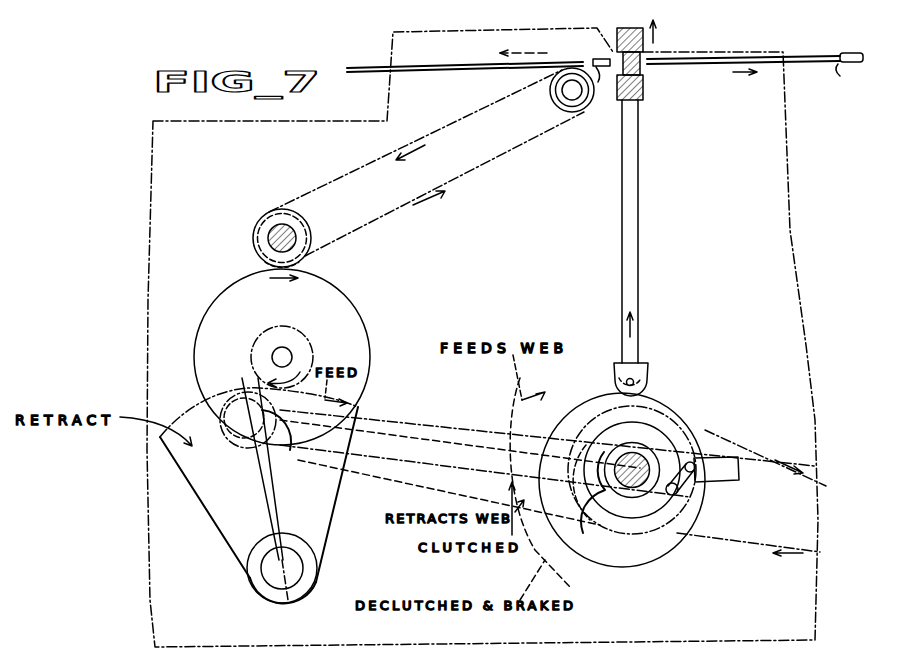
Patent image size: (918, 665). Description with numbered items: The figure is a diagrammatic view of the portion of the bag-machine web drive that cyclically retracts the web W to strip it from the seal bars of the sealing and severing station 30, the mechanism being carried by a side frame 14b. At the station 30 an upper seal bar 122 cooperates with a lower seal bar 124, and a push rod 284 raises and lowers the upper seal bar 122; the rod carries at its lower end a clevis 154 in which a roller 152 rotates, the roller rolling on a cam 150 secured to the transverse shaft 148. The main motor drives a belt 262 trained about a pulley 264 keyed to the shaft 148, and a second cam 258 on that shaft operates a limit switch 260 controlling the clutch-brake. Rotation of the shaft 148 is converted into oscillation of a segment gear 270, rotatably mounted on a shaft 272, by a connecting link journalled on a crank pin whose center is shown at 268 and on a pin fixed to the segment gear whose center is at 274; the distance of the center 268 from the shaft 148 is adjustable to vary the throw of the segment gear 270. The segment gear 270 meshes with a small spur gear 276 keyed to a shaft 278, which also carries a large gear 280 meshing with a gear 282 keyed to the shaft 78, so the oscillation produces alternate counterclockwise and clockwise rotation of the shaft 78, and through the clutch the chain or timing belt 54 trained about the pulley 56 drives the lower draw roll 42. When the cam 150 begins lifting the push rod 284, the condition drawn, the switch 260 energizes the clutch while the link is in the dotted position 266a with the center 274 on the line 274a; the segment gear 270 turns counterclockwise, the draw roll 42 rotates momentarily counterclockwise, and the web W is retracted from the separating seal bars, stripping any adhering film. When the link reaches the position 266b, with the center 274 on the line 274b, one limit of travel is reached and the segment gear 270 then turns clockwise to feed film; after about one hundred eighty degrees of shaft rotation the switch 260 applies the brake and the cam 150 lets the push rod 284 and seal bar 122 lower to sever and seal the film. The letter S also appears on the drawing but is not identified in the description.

The side frame 14b is at (235, 120).
The web W is at (425, 66).
The splice / web end S is at (720, 82).
The sealing and severing station 30 is at (674, 45).
The upper seal bar 122 is at (617, 42).
The lower seal bar 124 is at (643, 88).
The push rod 284 is at (638, 183).
The lower draw roll 42 is at (577, 111).
The chain or timing belt 54 is at (497, 157).
The pulley 56 is at (297, 218).
The shaft 78 is at (273, 231).
The gear 282 is at (253, 240).
The large gear 280 is at (328, 282).
The small spur gear 276 is at (255, 340).
The shaft 278 is at (284, 353).
The pin center 274 is at (265, 430).
The line position of center 274 274a is at (268, 478).
The line position of center 274 274b is at (258, 468).
The segment gear 270 is at (325, 506).
The shaft 272 is at (295, 563).
The connecting link position 266a is at (422, 420).
The connecting link position 266b is at (365, 418).
The cam 150 is at (581, 398).
The cam 258 is at (665, 444).
The transverse shaft 148 is at (638, 452).
The clevis 154 is at (648, 364).
The roller 152 is at (643, 383).
The limit switch 260 is at (738, 470).
The pulley 264 is at (692, 510).
The crank pin center 268 is at (600, 498).
The belt 262 is at (723, 545).